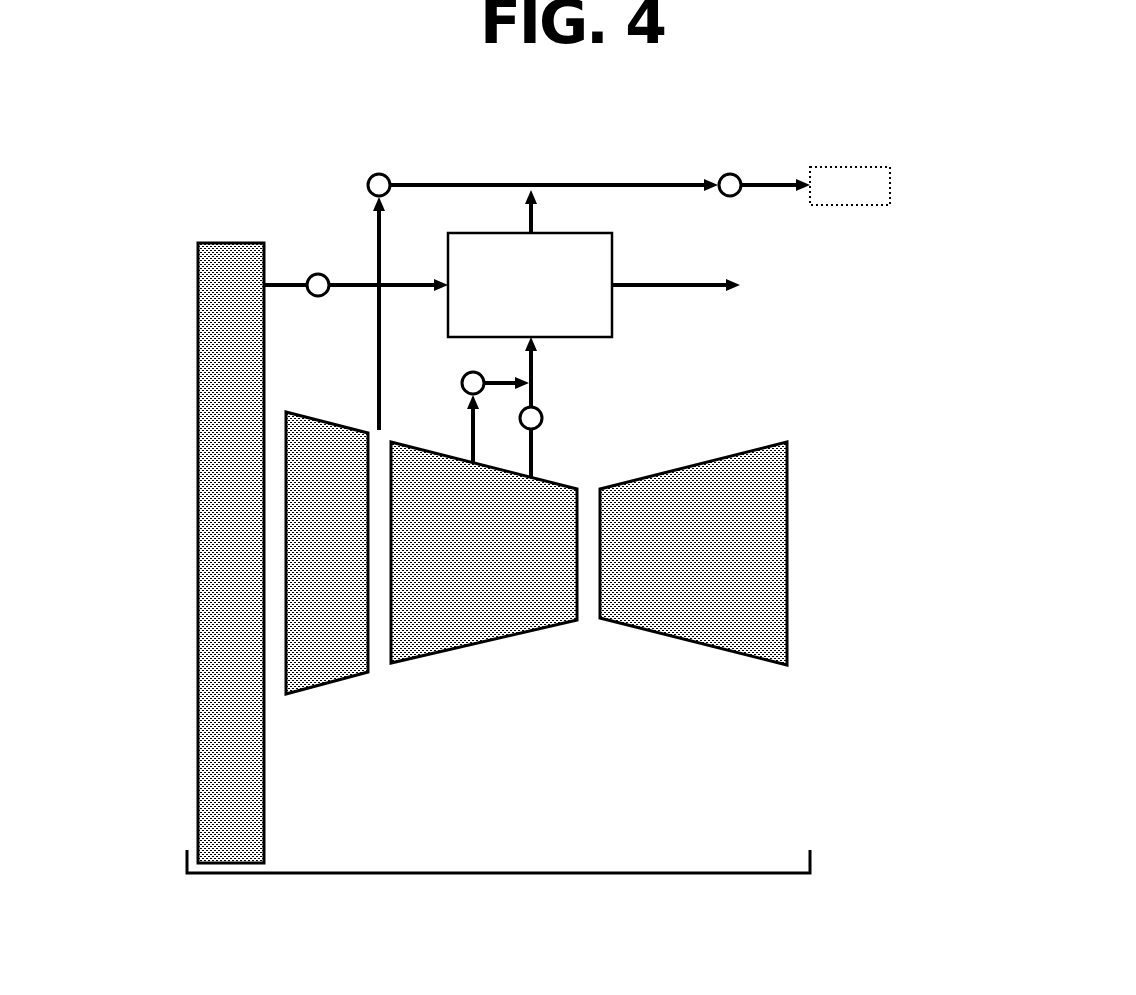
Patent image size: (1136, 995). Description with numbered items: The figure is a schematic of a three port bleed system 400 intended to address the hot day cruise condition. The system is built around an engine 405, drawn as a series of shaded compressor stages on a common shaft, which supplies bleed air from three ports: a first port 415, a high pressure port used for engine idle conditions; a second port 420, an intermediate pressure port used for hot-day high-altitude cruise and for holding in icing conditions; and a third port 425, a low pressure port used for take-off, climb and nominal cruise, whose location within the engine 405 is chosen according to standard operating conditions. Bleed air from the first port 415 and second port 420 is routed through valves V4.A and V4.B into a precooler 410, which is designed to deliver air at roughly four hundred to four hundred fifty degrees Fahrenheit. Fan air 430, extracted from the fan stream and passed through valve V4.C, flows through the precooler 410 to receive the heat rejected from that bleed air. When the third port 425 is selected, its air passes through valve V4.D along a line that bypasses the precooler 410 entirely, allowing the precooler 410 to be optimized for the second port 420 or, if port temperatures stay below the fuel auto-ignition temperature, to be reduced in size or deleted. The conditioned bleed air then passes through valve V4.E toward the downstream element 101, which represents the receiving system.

The three port bleed system 400 is at (1118, 74).
The engine 405 is at (810, 873).
The precooler 410 is at (550, 298).
The first port 415 is at (542, 475).
The second port 420 is at (459, 452).
The third port 425 is at (363, 424).
The fan air 430 is at (268, 273).
The external system 101 is at (850, 186).
The valve V4.A is at (542, 412).
The valve V4.B is at (465, 376).
The valve V4.C is at (326, 293).
The valve V4.D is at (370, 177).
The valve V4.E is at (722, 177).